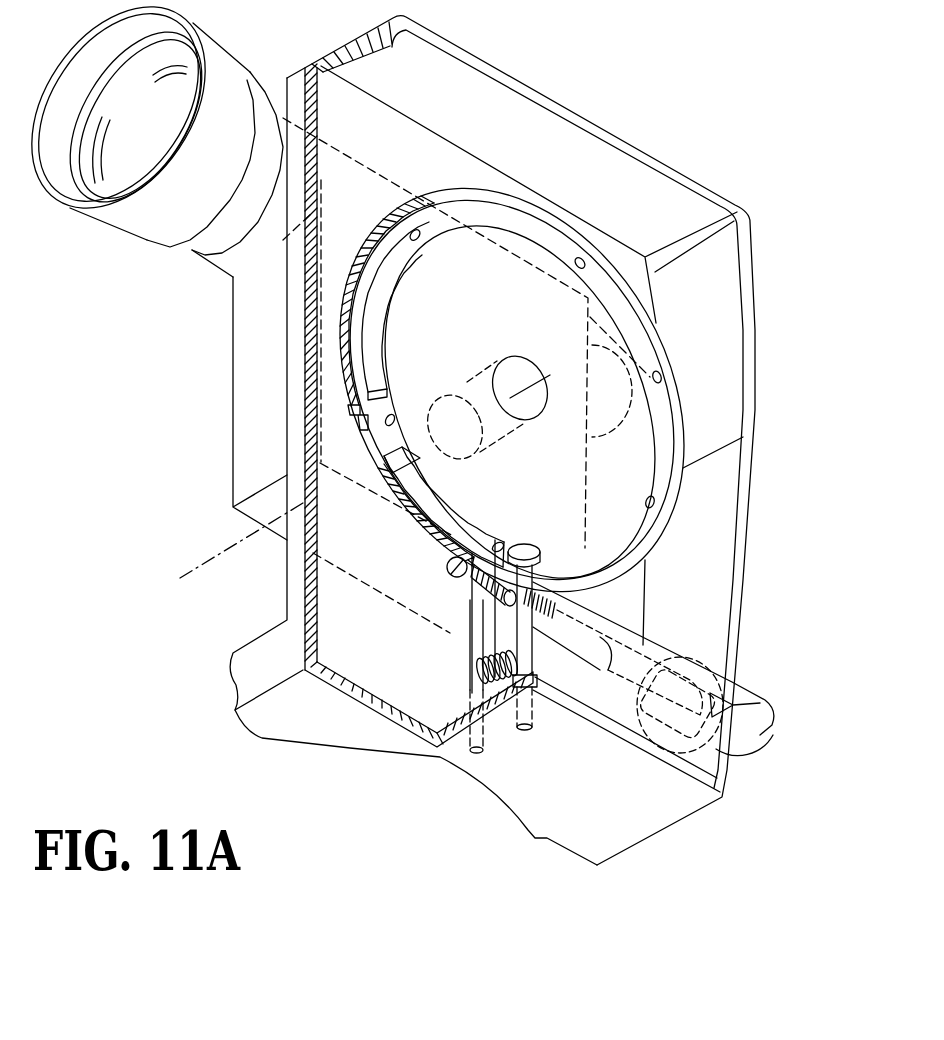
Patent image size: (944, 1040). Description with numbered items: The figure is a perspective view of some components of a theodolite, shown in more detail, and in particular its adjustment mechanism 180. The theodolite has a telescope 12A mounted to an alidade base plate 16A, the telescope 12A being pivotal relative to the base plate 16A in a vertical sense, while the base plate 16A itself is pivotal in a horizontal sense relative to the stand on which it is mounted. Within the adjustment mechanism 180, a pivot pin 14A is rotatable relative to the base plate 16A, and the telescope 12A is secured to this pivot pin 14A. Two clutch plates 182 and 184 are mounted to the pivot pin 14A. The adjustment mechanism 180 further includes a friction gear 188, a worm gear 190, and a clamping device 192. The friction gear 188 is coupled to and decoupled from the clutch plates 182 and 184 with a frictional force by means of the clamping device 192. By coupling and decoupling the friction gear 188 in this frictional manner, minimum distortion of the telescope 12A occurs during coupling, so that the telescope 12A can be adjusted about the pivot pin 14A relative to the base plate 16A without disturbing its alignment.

The telescope 12A is at (230, 57).
The adjustment mechanism 180 is at (700, 369).
The clutch plate 184 is at (377, 342).
The pivot pin 14A is at (468, 380).
The clutch plate 182 is at (357, 423).
The friction gear 188 is at (417, 530).
The worm gear 190 is at (465, 595).
The alidade base plate 16A is at (320, 595).
The clamping device 192 is at (683, 592).